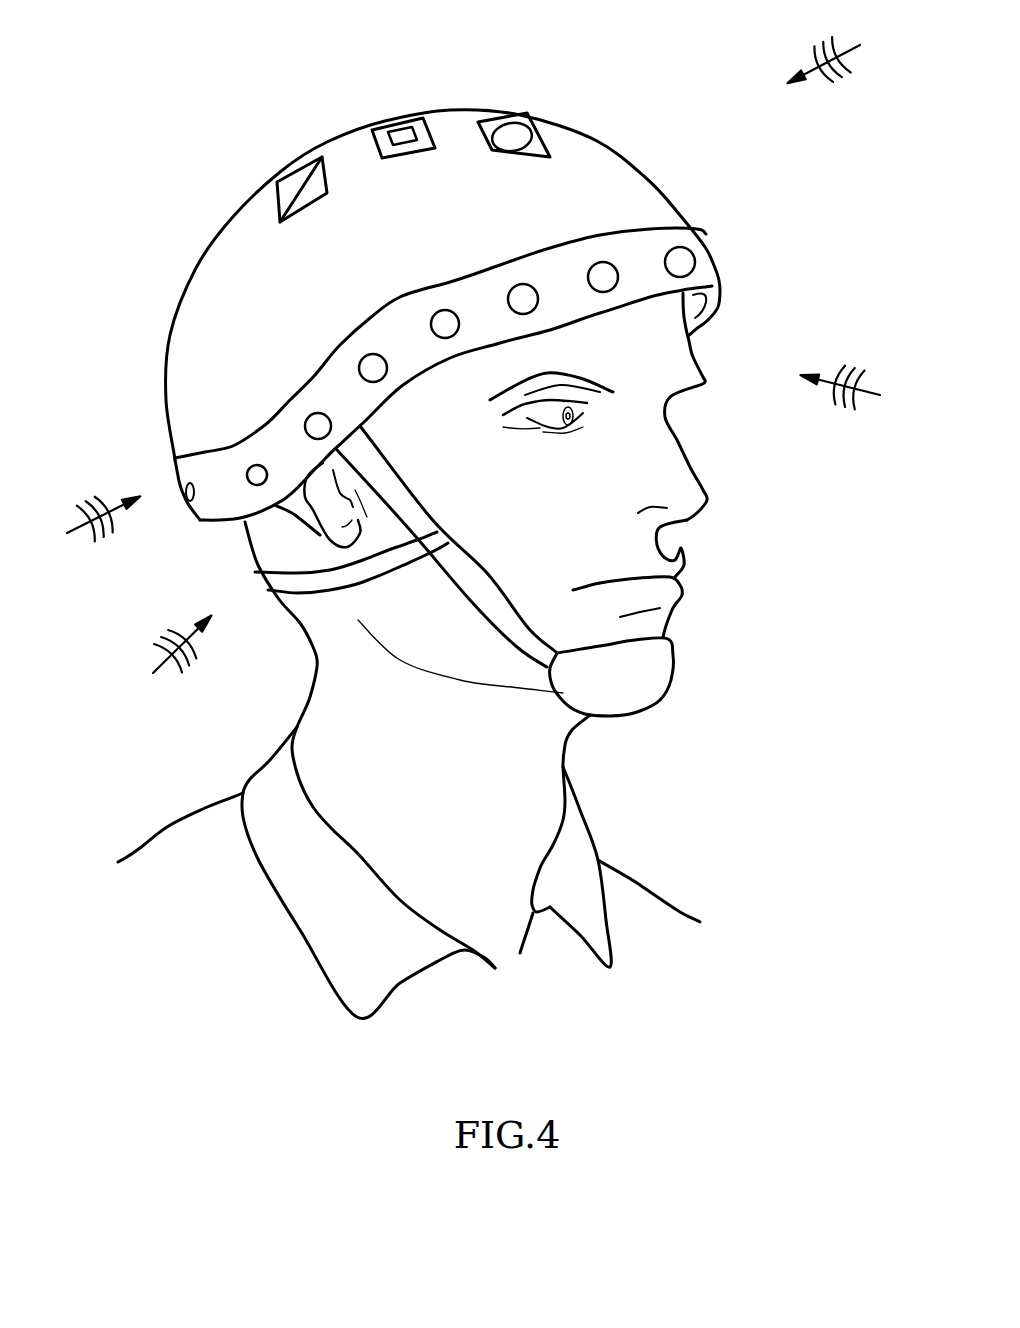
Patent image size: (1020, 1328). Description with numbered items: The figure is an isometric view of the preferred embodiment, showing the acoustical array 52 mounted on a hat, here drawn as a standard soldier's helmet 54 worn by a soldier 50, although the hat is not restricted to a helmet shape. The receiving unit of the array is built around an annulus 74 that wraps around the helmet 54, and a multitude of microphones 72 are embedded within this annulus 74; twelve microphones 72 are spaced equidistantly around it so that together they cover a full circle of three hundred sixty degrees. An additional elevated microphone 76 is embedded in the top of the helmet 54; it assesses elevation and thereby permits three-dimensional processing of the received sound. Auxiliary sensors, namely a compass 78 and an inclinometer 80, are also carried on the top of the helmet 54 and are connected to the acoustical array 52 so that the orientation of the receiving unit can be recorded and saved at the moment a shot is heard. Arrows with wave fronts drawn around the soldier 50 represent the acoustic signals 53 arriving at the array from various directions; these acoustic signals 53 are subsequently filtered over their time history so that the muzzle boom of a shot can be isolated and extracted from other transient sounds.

The soldier 50 is at (622, 900).
The acoustical array 52 is at (504, 358).
The acoustic signals 53 is at (858, 48).
The helmet 54 is at (588, 122).
The microphones 72 is at (525, 293).
The annulus 74 is at (485, 426).
The elevated microphone 76 is at (398, 132).
The compass 78 is at (512, 137).
The inclinometer 80 is at (295, 182).